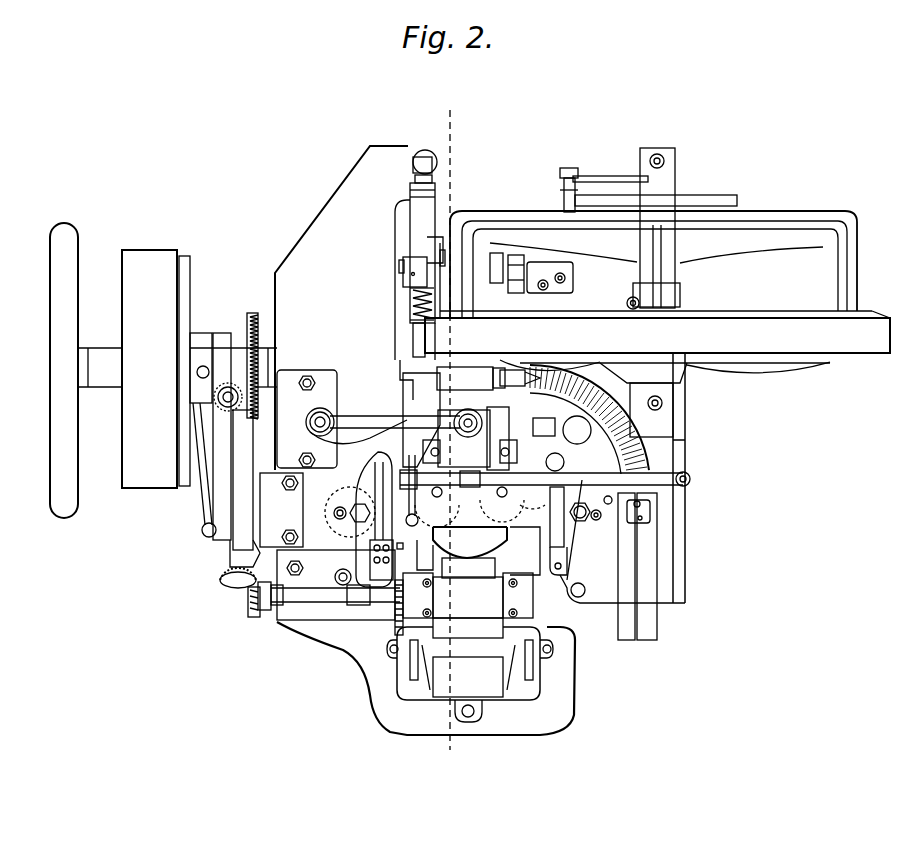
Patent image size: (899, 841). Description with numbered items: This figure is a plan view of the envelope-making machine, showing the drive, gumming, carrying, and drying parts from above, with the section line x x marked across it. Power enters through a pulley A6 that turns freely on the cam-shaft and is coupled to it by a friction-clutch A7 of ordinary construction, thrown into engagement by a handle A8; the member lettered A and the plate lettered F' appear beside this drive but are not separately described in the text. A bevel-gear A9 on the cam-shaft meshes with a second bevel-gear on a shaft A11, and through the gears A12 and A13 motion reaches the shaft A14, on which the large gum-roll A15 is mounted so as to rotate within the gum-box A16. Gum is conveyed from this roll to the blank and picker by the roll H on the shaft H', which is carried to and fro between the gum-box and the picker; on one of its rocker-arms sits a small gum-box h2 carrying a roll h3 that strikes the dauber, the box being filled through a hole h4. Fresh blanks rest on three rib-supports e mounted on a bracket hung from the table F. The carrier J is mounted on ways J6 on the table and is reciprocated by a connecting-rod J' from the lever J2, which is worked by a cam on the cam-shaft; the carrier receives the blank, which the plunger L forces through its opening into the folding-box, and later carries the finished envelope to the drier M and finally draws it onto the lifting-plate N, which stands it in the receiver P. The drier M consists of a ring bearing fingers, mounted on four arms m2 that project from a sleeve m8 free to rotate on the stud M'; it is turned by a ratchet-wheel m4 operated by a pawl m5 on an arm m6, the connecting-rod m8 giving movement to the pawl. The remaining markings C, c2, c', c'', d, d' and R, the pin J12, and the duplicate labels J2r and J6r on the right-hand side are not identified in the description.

The section line x x is at (463, 422).
The pulley A6 is at (149, 369).
The friction-clutch A7 is at (184, 270).
The handle A8 is at (208, 506).
The shaft column A is at (228, 441).
The bevel-gear A9 is at (260, 302).
The shaft A11 is at (232, 542).
The gear A12 is at (230, 584).
The gear A13 is at (250, 618).
The shaft A14 is at (310, 604).
The table F is at (341, 383).
The frame plate F' is at (291, 510).
The carrier J is at (396, 291).
The ways J6 is at (412, 176).
The pin J12 is at (405, 258).
The lever J2 is at (403, 270).
The connecting-rod J' is at (395, 302).
The plunger L is at (399, 426).
The lifting-plate N is at (501, 415).
The receiver P is at (601, 419).
The bars C is at (522, 492).
The rod c2 is at (690, 478).
The nut d' is at (462, 518).
The rib-supports e is at (440, 517).
The small gum-box h2 is at (405, 552).
The roll h3 is at (394, 610).
The hole h4 is at (423, 490).
The pivot c' is at (437, 487).
The block c'' is at (451, 472).
The pivot d is at (475, 512).
The cup R is at (470, 542).
The roll H is at (468, 568).
The shaft H' is at (525, 551).
The large gum-roll A15 is at (468, 605).
The gum-box A16 is at (470, 674).
The drier M is at (657, 298).
The arms m2 is at (778, 220).
The stud M' is at (653, 216).
The ratchet-wheel m4 is at (712, 190).
The arm m6 is at (617, 170).
The sleeve m8 is at (675, 172).
The pawl m5 is at (558, 190).
The slide J2r is at (497, 255).
The plate J6r is at (525, 290).